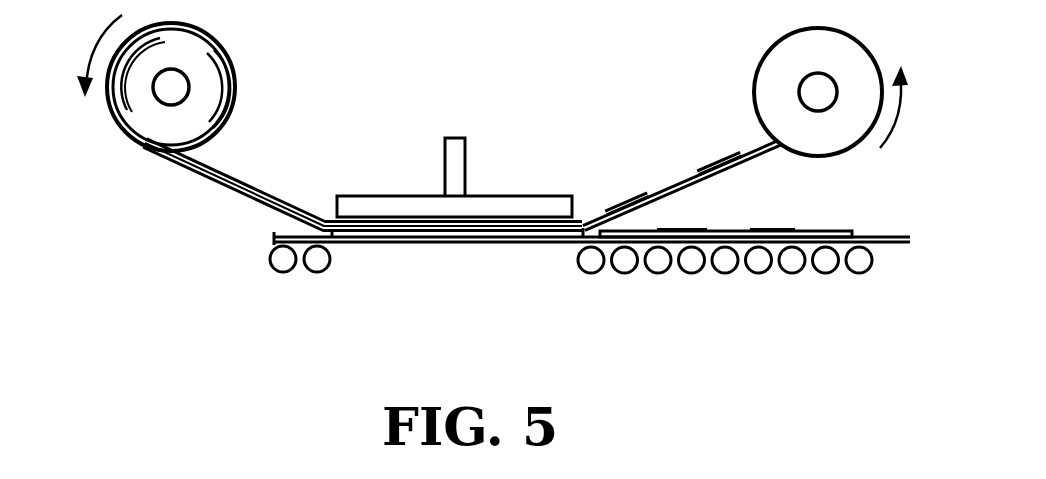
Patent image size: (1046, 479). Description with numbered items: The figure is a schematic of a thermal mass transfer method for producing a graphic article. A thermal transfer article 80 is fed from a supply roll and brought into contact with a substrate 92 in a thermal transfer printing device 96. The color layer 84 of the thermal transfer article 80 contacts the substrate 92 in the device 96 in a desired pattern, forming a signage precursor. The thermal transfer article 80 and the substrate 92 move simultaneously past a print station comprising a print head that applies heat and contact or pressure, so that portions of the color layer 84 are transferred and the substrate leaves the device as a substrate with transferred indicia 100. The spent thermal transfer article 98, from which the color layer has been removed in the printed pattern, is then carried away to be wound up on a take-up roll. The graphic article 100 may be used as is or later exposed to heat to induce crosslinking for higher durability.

The thermal transfer article 80 is at (259, 192).
The color layer 84 is at (200, 170).
The substrate 92 is at (370, 238).
The thermal transfer printing device 96 is at (466, 153).
The spent thermal transfer article 98 is at (683, 183).
The substrate with transferred indicia 100 is at (824, 231).